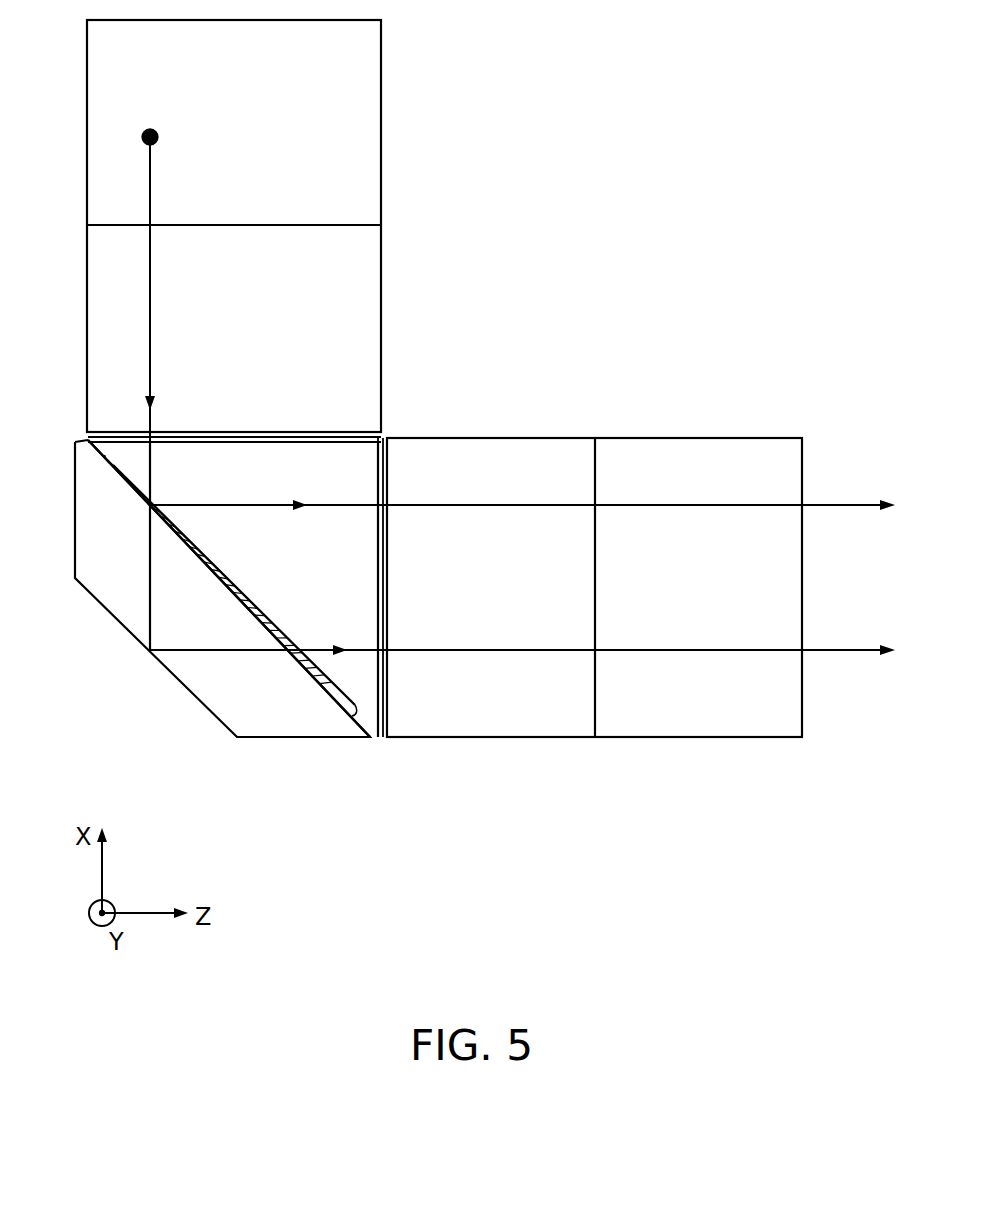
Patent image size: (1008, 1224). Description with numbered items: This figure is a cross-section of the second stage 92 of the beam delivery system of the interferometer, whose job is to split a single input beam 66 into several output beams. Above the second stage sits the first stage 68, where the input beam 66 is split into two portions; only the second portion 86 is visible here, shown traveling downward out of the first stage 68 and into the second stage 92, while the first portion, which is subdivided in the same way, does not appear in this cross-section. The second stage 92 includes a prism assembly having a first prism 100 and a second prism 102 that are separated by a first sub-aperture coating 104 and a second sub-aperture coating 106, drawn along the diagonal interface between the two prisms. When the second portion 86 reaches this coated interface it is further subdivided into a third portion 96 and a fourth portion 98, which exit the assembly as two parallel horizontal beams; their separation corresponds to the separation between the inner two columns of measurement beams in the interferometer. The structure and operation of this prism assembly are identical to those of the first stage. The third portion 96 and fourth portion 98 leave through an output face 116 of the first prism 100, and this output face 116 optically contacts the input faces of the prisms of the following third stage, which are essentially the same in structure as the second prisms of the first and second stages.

The input beam 66 is at (158, 136).
The first stage 68 is at (440, 175).
The second portion 86 is at (152, 313).
The second stage 92 is at (128, 673).
The third portion 96 is at (838, 503).
The fourth portion 98 is at (838, 648).
The first prism 100 is at (334, 544).
The second prism 102 is at (309, 719).
The first sub-aperture coating 104 is at (167, 538).
The second sub-aperture coating 106 is at (273, 620).
The output face 116 is at (387, 460).